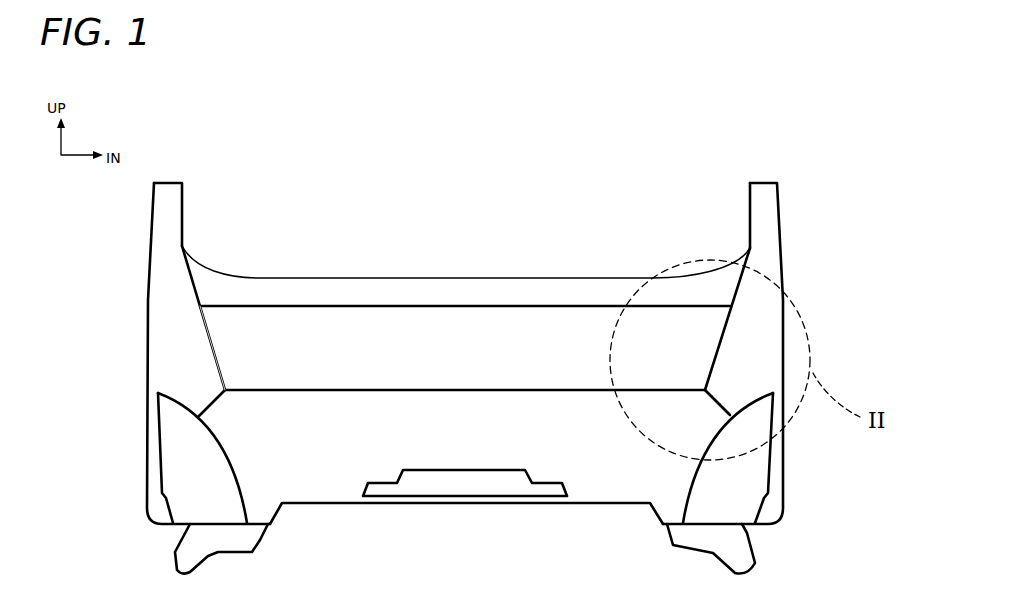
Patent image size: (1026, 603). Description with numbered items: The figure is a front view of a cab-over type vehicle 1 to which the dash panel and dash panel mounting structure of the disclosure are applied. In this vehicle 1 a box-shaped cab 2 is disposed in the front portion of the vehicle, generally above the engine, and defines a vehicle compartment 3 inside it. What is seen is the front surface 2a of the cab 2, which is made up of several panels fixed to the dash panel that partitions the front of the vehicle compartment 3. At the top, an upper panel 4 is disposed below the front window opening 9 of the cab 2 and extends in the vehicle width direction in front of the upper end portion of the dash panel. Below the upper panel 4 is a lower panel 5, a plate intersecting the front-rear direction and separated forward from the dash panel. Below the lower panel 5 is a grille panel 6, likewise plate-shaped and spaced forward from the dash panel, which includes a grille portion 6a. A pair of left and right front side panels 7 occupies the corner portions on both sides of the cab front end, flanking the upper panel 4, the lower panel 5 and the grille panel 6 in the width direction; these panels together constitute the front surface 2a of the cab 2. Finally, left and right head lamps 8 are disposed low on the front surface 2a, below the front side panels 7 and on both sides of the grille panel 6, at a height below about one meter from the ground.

The vehicle 1 is at (817, 171).
The cab 2 is at (149, 284).
The front surface 2a is at (318, 327).
The vehicle compartment 3 is at (466, 245).
The upper panel 4 is at (515, 288).
The lower panel 5 is at (382, 328).
The grille panel 6 is at (337, 477).
The grille portion 6a is at (542, 497).
The front side panel 7 is at (173, 338).
The head lamp 8 is at (187, 473).
The front window opening 9 is at (606, 278).